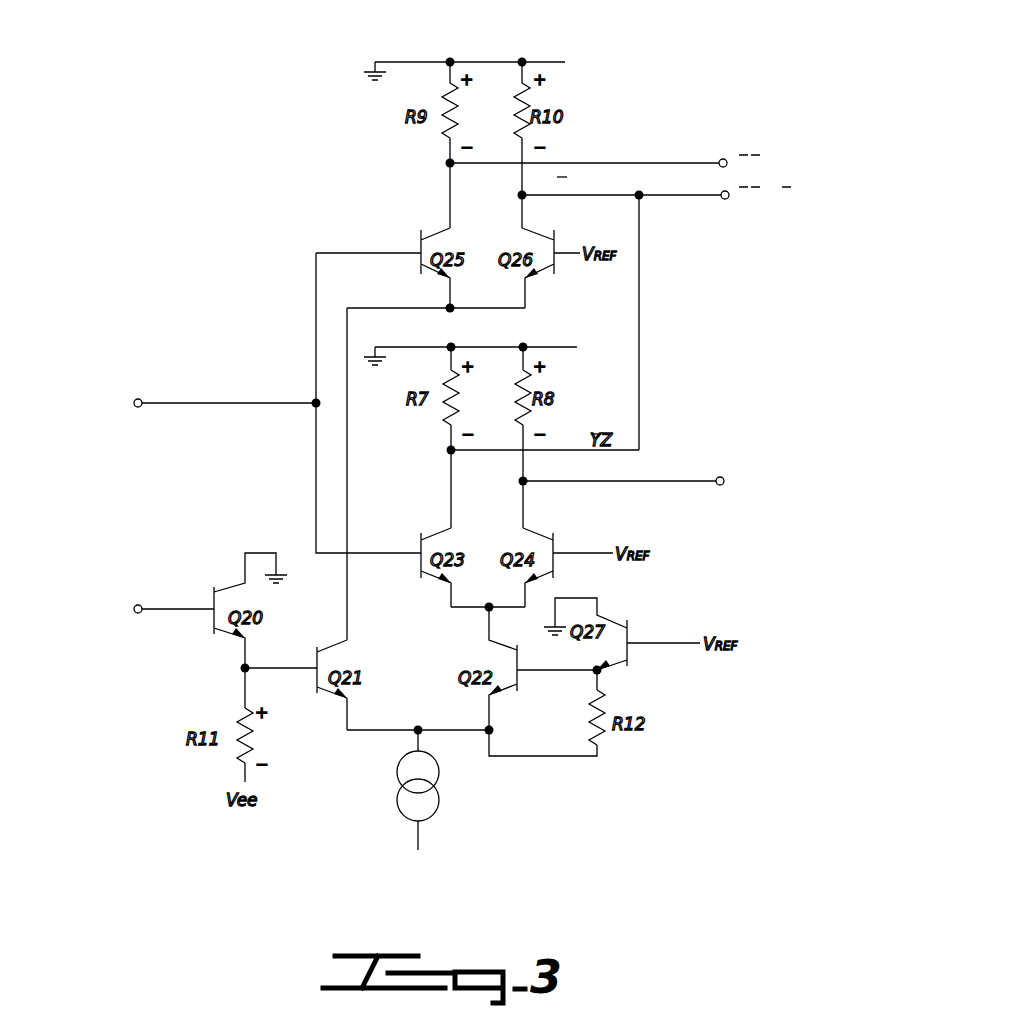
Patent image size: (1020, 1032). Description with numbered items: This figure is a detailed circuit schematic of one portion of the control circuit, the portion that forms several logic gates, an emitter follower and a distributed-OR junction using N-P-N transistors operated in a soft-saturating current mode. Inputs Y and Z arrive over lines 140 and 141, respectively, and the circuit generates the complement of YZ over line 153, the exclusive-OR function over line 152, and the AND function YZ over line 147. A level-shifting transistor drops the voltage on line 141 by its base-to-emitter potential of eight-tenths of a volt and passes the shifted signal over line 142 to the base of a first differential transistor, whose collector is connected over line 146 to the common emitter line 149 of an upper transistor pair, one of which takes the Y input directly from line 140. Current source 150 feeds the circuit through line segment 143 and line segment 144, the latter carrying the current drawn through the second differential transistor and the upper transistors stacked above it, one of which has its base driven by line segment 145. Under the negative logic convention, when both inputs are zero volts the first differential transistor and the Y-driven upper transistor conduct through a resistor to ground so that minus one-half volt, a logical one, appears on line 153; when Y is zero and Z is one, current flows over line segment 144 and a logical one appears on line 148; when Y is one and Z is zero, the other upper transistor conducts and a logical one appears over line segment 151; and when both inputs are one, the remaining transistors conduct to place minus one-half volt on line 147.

The line 140 is at (240, 408).
The line 141 is at (198, 611).
The line from Q20 emitter to Q21 base 142 is at (300, 672).
The line segment 143 is at (369, 738).
The line segment 144 is at (478, 732).
The line segment 145 is at (312, 463).
The line from Q21 collector to Q25/Q26 emitters 146 is at (349, 466).
The line 147 is at (701, 485).
The line 148 is at (641, 295).
The Q25/Q26 common emitter line 149 is at (504, 309).
The current source 150 is at (439, 790).
The line segment 151 is at (583, 205).
The line 152 is at (664, 204).
The line 153 is at (638, 168).